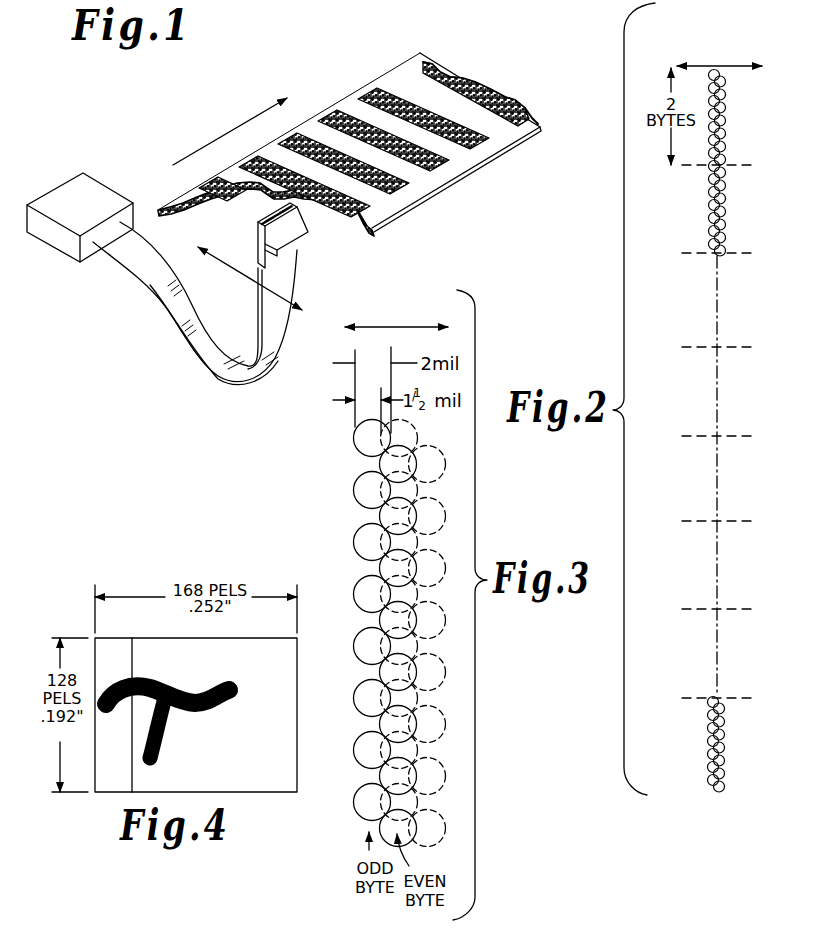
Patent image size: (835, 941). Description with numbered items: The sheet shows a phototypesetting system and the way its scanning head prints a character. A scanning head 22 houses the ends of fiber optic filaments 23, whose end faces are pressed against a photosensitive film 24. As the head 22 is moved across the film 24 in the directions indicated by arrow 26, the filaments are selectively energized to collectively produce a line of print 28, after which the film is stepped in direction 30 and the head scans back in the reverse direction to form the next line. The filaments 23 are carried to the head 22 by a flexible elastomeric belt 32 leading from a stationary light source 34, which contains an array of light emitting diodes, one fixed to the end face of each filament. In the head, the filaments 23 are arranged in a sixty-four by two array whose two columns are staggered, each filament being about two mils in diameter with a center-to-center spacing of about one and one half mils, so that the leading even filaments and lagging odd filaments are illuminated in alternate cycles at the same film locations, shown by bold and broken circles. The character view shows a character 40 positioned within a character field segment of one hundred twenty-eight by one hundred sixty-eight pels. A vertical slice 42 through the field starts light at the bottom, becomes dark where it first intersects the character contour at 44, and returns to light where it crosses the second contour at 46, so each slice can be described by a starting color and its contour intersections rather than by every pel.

In FIG. 1, the scanning head 22 is at (306, 233).
In FIG. 1, the fiber optic filaments 23 is at (280, 212).
In FIG. 2, the fiber optic filaments 23 is at (726, 125).
In FIG. 3, the fiber optic filaments 23 is at (366, 540).
In FIG. 1, the photosensitive film 24 is at (466, 158).
In FIG. 1, the arrow indicating scanning directions 26 is at (248, 278).
In FIG. 2, the arrow indicating scanning directions 26 is at (727, 66).
In FIG. 3, the arrow indicating scanning directions 26 is at (395, 327).
In FIG. 1, the line of print 28 is at (355, 108).
In FIG. 1, the film stepping direction 30 is at (232, 129).
In FIG. 1, the flexible elastomeric belt 32 is at (172, 302).
In FIG. 1, the stationary light source 34 is at (60, 238).
In FIG. 4, the character to be printed 40 is at (200, 707).
In FIG. 4, the slice 42 is at (132, 777).
In FIG. 4, the first contour intersection 44 is at (130, 697).
In FIG. 4, the second contour intersection 46 is at (132, 680).